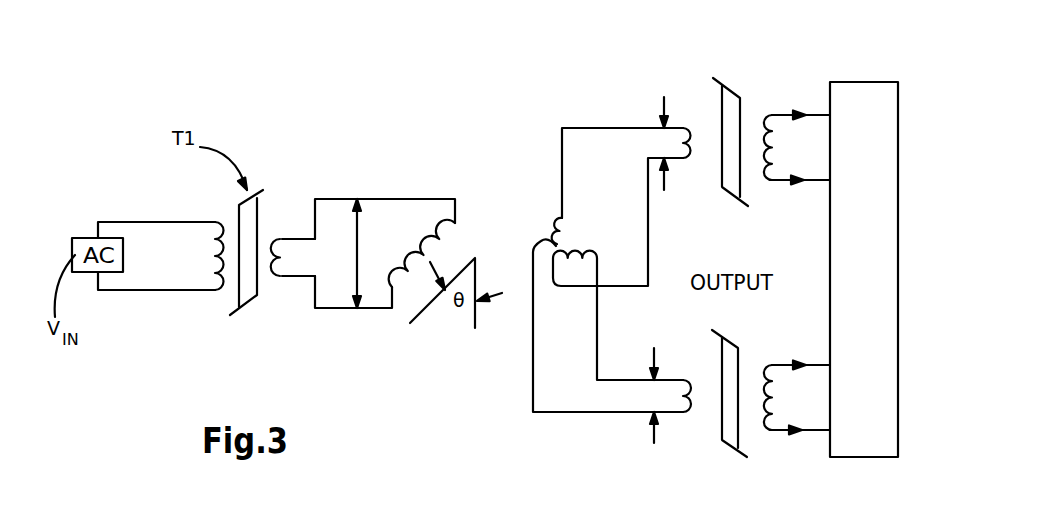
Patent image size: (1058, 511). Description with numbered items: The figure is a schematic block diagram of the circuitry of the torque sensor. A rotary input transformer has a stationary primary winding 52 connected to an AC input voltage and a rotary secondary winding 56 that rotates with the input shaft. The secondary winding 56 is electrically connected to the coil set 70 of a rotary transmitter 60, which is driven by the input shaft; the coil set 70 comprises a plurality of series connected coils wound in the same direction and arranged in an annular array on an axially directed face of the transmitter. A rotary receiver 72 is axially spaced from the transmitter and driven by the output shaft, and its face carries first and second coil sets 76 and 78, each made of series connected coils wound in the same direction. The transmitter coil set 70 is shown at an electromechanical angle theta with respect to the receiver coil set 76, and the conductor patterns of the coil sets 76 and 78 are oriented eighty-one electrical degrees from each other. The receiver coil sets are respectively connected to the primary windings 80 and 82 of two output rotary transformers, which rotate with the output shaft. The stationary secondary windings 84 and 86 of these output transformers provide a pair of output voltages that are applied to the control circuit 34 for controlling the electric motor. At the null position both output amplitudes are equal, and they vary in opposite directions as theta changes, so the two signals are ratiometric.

The control circuit 34 is at (863, 127).
The stationary primary winding 52 is at (213, 253).
The rotary secondary winding 56 is at (282, 263).
The rotary transmitter 60 is at (406, 212).
The transmitter coil set 70 is at (408, 255).
The rotary receiver 72 is at (588, 264).
The first receiver coil set 76 is at (560, 238).
The second receiver coil set 78 is at (567, 250).
The primary winding of output transformer T2 80 is at (690, 147).
The primary winding of output transformer T3 82 is at (670, 392).
The stationary secondary winding of output transformer T2 84 is at (787, 111).
The stationary secondary winding of output transformer T3 86 is at (786, 407).